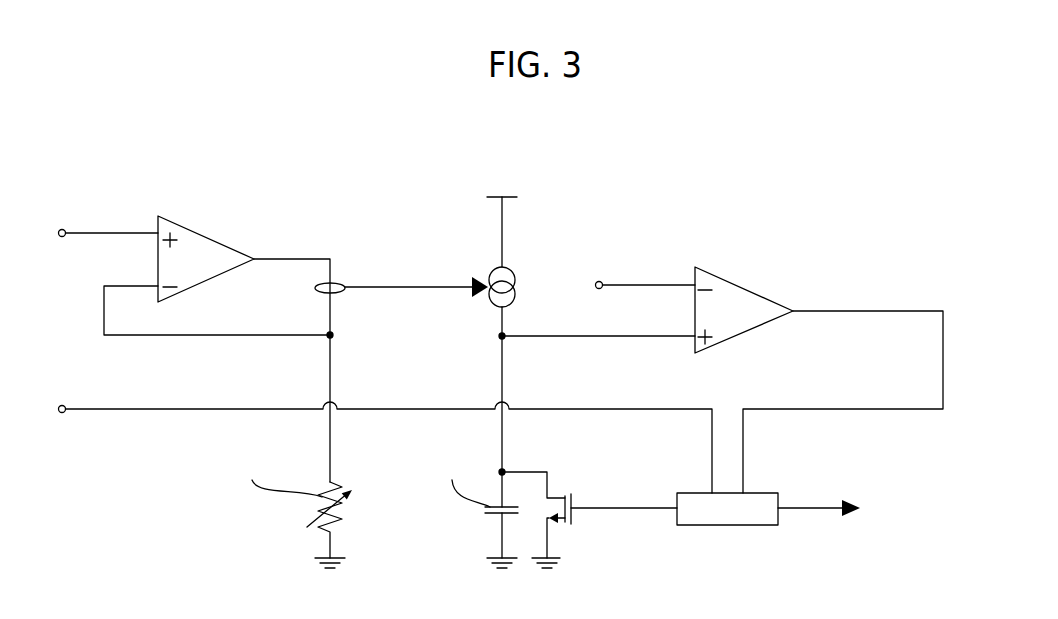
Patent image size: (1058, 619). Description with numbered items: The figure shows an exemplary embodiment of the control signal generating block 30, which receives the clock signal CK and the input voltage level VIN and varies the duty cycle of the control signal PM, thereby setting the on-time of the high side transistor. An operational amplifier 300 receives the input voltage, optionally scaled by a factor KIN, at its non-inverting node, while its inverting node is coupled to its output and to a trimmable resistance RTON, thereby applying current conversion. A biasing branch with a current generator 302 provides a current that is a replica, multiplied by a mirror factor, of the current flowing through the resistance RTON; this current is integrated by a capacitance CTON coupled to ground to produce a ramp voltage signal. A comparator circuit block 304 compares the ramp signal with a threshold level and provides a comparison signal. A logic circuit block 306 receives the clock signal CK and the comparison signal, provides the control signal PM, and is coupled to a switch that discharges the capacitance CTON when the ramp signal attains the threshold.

The control signal generating block 30 is at (690, 227).
The operational amplifier 300 is at (225, 207).
The current generator 302 is at (517, 272).
The comparator circuit block 304 is at (762, 293).
The logic circuit block 306 is at (720, 525).